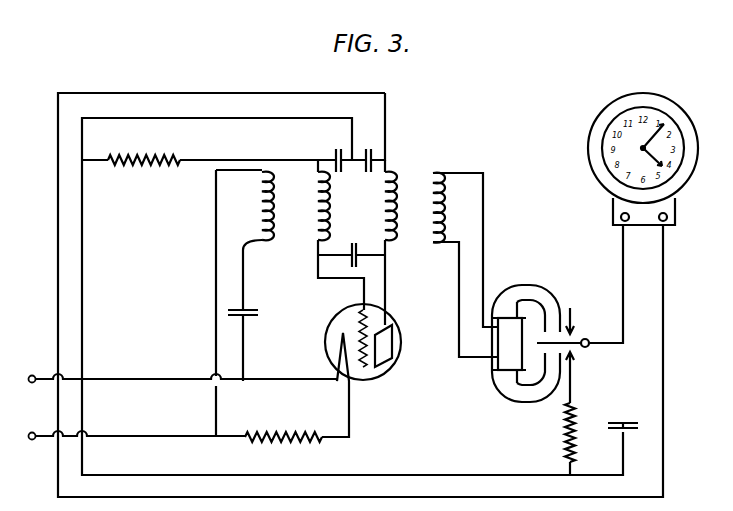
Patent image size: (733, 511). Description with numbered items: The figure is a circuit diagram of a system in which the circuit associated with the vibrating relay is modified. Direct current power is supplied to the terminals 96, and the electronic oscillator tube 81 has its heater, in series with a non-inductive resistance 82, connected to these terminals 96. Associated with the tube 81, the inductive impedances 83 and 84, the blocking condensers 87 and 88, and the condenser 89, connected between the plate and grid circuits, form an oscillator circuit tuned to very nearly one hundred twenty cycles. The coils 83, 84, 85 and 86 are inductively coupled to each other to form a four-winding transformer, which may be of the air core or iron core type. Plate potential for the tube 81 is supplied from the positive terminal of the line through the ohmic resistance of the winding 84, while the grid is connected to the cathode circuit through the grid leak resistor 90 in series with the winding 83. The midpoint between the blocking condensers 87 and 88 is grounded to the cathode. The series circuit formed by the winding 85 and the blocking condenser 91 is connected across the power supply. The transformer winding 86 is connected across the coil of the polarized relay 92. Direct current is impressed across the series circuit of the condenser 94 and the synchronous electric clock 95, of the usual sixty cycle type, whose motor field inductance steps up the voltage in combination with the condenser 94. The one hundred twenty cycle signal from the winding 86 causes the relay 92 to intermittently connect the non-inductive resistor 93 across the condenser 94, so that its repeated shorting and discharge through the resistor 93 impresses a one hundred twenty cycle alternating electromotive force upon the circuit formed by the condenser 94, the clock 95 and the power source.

The electronic oscillator tube 81 is at (393, 318).
The non-inductive resistance 82 is at (285, 440).
The inductive impedance winding 83 is at (330, 210).
The inductive impedance winding 84 is at (392, 210).
The transformer winding 85 is at (278, 212).
The transformer winding 86 is at (443, 216).
The blocking condenser 87 is at (333, 150).
The blocking condenser 88 is at (369, 147).
The condenser 89 is at (355, 240).
The grid leak resistor 90 is at (146, 163).
The blocking condenser 91 is at (249, 312).
The polarized relay 92 is at (537, 283).
The non-inductive resistor 93 is at (564, 432).
The condenser 94 is at (614, 418).
The synchronous electric clock 95 is at (588, 148).
The terminals 96 is at (32, 427).